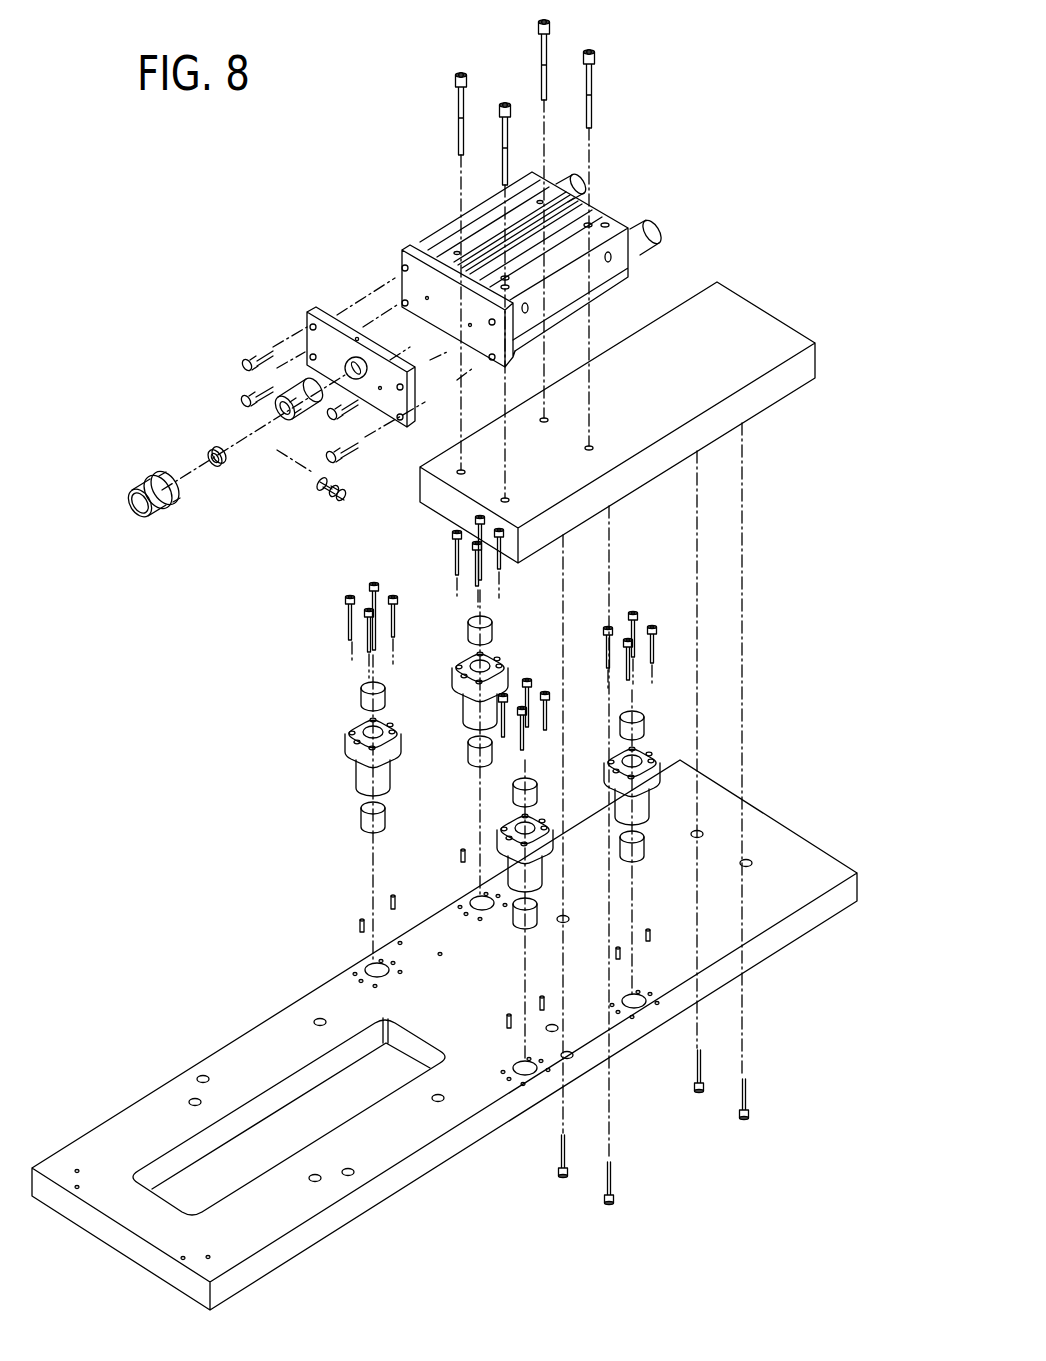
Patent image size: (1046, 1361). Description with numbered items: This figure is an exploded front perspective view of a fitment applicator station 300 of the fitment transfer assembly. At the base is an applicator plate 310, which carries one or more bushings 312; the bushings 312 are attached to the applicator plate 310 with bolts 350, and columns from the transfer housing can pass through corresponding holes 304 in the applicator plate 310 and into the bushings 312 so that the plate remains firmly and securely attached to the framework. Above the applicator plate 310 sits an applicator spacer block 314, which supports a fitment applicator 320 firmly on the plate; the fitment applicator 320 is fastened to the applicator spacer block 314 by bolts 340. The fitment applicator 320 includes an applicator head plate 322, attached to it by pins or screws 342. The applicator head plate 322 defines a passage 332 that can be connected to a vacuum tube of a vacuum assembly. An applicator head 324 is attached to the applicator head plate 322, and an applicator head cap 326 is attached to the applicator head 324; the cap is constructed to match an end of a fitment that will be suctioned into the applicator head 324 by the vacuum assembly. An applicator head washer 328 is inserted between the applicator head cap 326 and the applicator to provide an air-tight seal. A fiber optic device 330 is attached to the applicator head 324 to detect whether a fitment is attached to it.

The fitment applicator station 300 is at (786, 585).
The holes 304 is at (478, 903).
The applicator plate 310 is at (727, 940).
The bushings 312 is at (461, 690).
The applicator spacer block 314 is at (720, 328).
The fitment applicator 320 is at (425, 196).
The applicator head plate 322 is at (320, 335).
The applicator head 324 is at (278, 418).
The applicator head cap 326 is at (132, 490).
The applicator head washer 328 is at (208, 453).
The fiber optic device 330 is at (330, 490).
The passage 332 is at (357, 337).
The bolts 340 is at (502, 126).
The pins or screws 342 is at (243, 404).
The bolts 350 is at (446, 524).